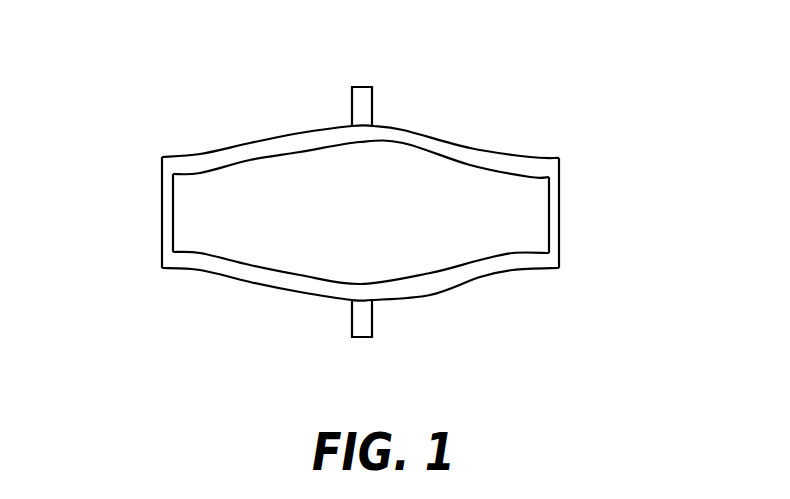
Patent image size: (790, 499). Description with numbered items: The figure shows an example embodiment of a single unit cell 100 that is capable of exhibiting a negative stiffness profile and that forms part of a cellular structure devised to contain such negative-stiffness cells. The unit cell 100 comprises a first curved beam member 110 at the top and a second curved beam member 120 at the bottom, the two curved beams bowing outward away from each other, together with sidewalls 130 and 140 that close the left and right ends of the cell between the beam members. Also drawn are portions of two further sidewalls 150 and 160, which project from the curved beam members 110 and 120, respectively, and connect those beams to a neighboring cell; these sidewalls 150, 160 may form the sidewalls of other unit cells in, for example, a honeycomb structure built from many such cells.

The unit cell 100 is at (231, 64).
The first curved beam member 110 is at (500, 152).
The second curved beam member 120 is at (515, 271).
The sidewall 130 is at (162, 198).
The sidewall 140 is at (559, 215).
The sidewall 150 is at (362, 87).
The sidewall 160 is at (350, 333).